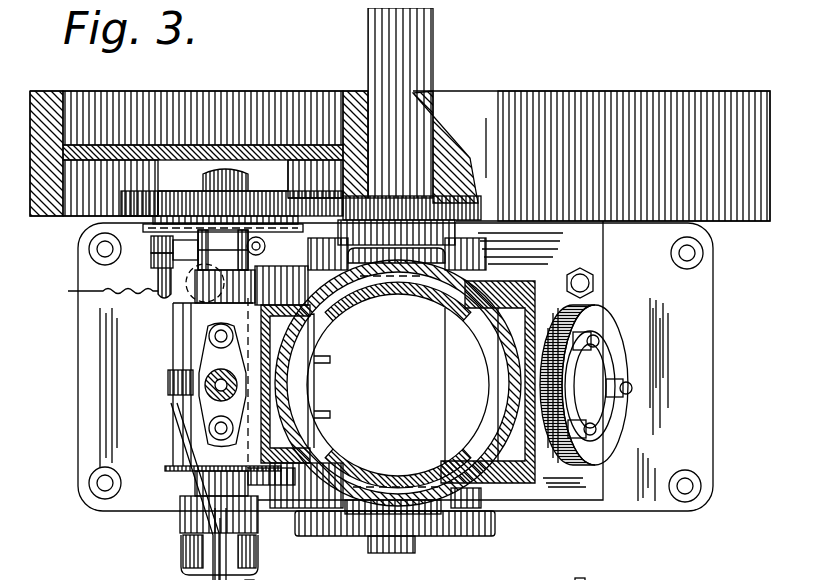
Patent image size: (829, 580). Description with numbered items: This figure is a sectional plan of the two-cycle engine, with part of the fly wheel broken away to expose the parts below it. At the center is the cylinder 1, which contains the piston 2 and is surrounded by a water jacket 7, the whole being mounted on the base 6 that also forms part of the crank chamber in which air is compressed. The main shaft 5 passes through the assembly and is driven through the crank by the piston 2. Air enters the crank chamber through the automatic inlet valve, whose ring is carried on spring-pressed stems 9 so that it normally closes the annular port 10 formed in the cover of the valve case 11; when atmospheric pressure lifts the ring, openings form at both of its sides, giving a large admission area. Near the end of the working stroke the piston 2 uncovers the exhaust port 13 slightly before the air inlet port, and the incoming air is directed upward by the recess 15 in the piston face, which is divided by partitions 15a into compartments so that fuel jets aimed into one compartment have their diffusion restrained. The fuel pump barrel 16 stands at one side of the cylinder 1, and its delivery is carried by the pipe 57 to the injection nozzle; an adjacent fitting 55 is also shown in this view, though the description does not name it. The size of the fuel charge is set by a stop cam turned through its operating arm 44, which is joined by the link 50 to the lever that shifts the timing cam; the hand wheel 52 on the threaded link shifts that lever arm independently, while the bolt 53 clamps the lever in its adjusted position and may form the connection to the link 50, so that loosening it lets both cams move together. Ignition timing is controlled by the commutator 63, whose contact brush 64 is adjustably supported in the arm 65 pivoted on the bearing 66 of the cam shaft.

The cylinder 1 is at (392, 468).
The piston 2 is at (398, 383).
The main shaft 5 is at (413, 60).
The base 6 is at (551, 493).
The water jacket 7 is at (355, 503).
The spring-pressed stems 9 is at (588, 420).
The annular port 10 is at (600, 348).
The valve case 11 is at (582, 307).
The exhaust port 13 is at (477, 345).
The recess 15 is at (322, 378).
The partitions 15a is at (313, 348).
The barrel 16 is at (205, 372).
The operating arm 44 is at (178, 404).
The link 50 is at (180, 475).
The hand wheel 52 is at (187, 579).
The bolt 53 is at (250, 579).
The flange 55 is at (303, 531).
The pipe 57 is at (590, 579).
The commutator 63 is at (145, 222).
The contact brush 64 is at (150, 283).
The arm 65 is at (160, 248).
The bearing 66 is at (225, 265).